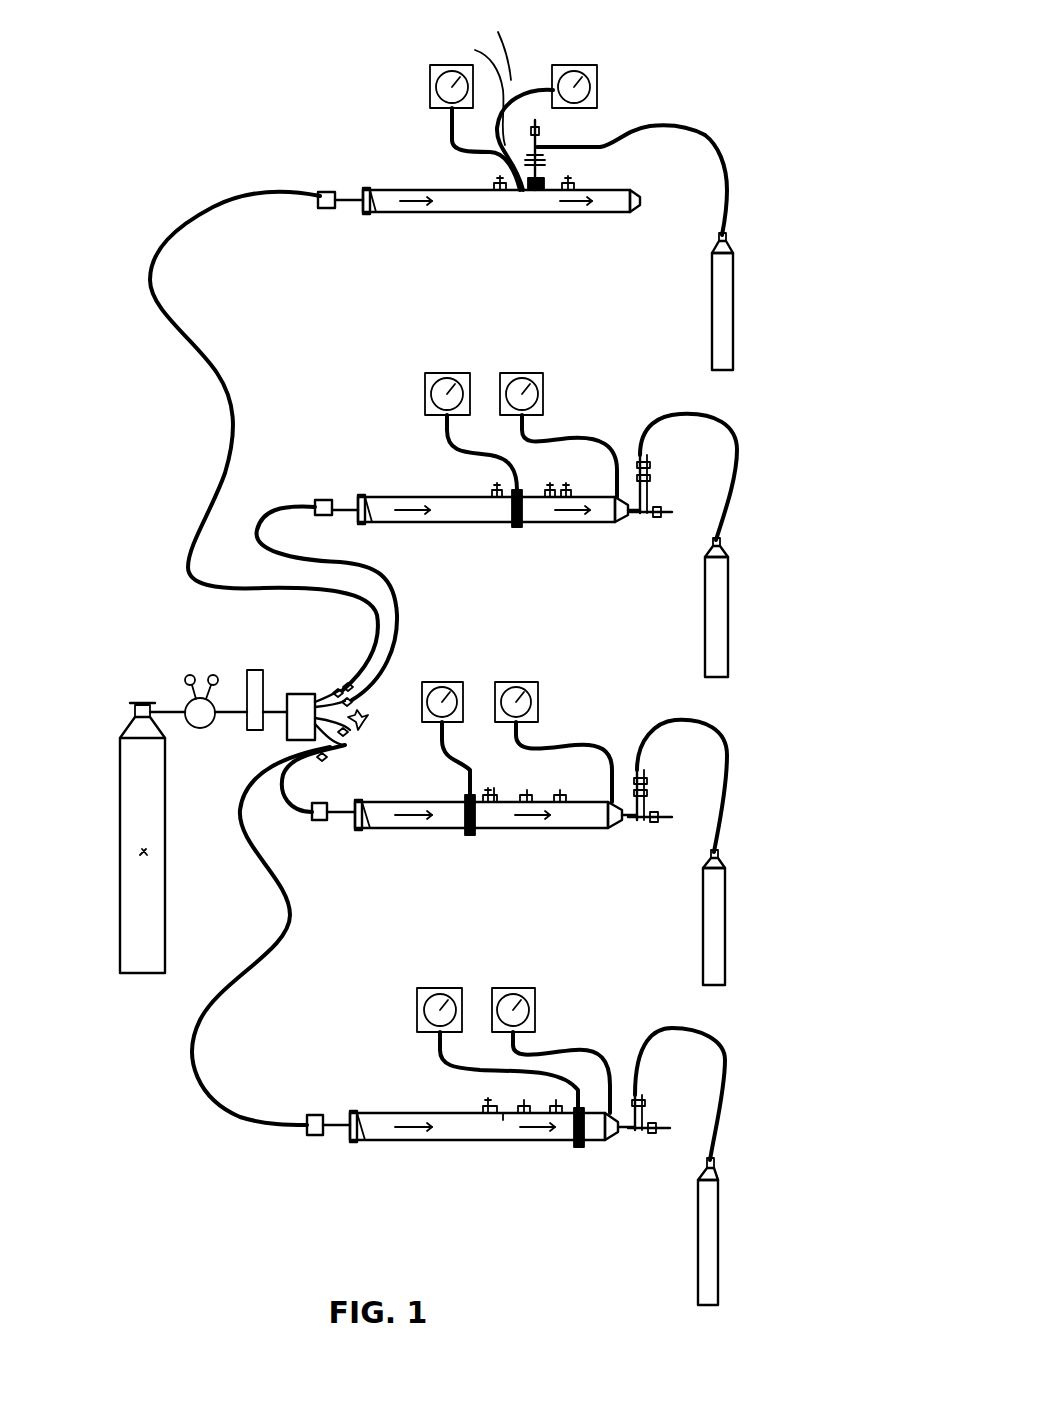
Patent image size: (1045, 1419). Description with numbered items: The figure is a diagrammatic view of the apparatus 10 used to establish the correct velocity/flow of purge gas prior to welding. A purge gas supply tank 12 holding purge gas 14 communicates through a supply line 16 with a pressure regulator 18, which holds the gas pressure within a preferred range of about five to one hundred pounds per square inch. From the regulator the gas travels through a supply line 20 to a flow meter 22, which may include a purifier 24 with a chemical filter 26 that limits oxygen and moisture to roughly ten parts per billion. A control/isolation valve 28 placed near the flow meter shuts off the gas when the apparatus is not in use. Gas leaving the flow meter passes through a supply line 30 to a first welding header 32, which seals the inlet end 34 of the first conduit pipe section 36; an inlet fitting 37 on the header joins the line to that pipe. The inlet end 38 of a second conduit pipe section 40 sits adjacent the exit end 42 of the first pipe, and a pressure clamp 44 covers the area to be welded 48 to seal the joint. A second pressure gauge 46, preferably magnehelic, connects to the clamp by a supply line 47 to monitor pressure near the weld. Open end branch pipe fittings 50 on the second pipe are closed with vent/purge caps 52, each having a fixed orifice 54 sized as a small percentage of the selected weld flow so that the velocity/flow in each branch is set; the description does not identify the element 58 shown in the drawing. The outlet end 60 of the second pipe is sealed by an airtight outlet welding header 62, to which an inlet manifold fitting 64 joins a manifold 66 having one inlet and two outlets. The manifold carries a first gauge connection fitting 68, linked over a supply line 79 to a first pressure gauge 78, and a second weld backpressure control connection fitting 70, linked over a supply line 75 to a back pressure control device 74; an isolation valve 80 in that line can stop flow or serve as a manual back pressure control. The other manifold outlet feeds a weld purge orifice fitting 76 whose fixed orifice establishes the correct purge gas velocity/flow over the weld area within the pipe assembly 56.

The apparatus 10 is at (445, 276).
The purge gas supply tank 12 is at (165, 928).
The purge gas 14 is at (160, 858).
The supply line 16 is at (170, 707).
The pressure regulator 18 is at (200, 728).
The supply line 20 is at (238, 705).
The flow meter 22 is at (256, 670).
The purifier 24 is at (308, 694).
The chemical filter 26 is at (323, 208).
The control/isolation valve 28 is at (346, 683).
The supply line 30 is at (186, 568).
The first welding header 32 is at (367, 214).
The inlet end 34 is at (376, 190).
The first conduit pipe section 36 is at (433, 215).
The inlet fitting 37 is at (352, 198).
The inlet end 38 is at (522, 515).
The second conduit pipe section 40 is at (572, 215).
The exit end 42 is at (500, 212).
The pressure clamp 44 is at (530, 212).
The second pressure gauge 46 is at (430, 88).
The supply line 47 is at (452, 135).
The area to be welded 48 is at (540, 212).
The open end branch pipe fittings 50 is at (498, 185).
The vent/purge cap 52 is at (556, 1110).
The fixed orifice 54 is at (540, 135).
The pipe assembly 56 is at (490, 212).
The junction 58 is at (517, 488).
The outlet end 60 is at (547, 212).
The outlet welding header 62 is at (636, 195).
The inlet manifold fitting 64 is at (634, 512).
The manifold 66 is at (643, 1110).
The first gauge connection fitting 68 is at (655, 865).
The second weld backpressure control connection fitting 70 is at (620, 130).
The back pressure control device 74 is at (733, 297).
The supply line 75 is at (708, 135).
The weld purge orifice fitting 76 is at (652, 1124).
The first pressure gauge 78 is at (597, 86).
The supply line 79 is at (507, 90).
The isolation valve 80 is at (580, 146).